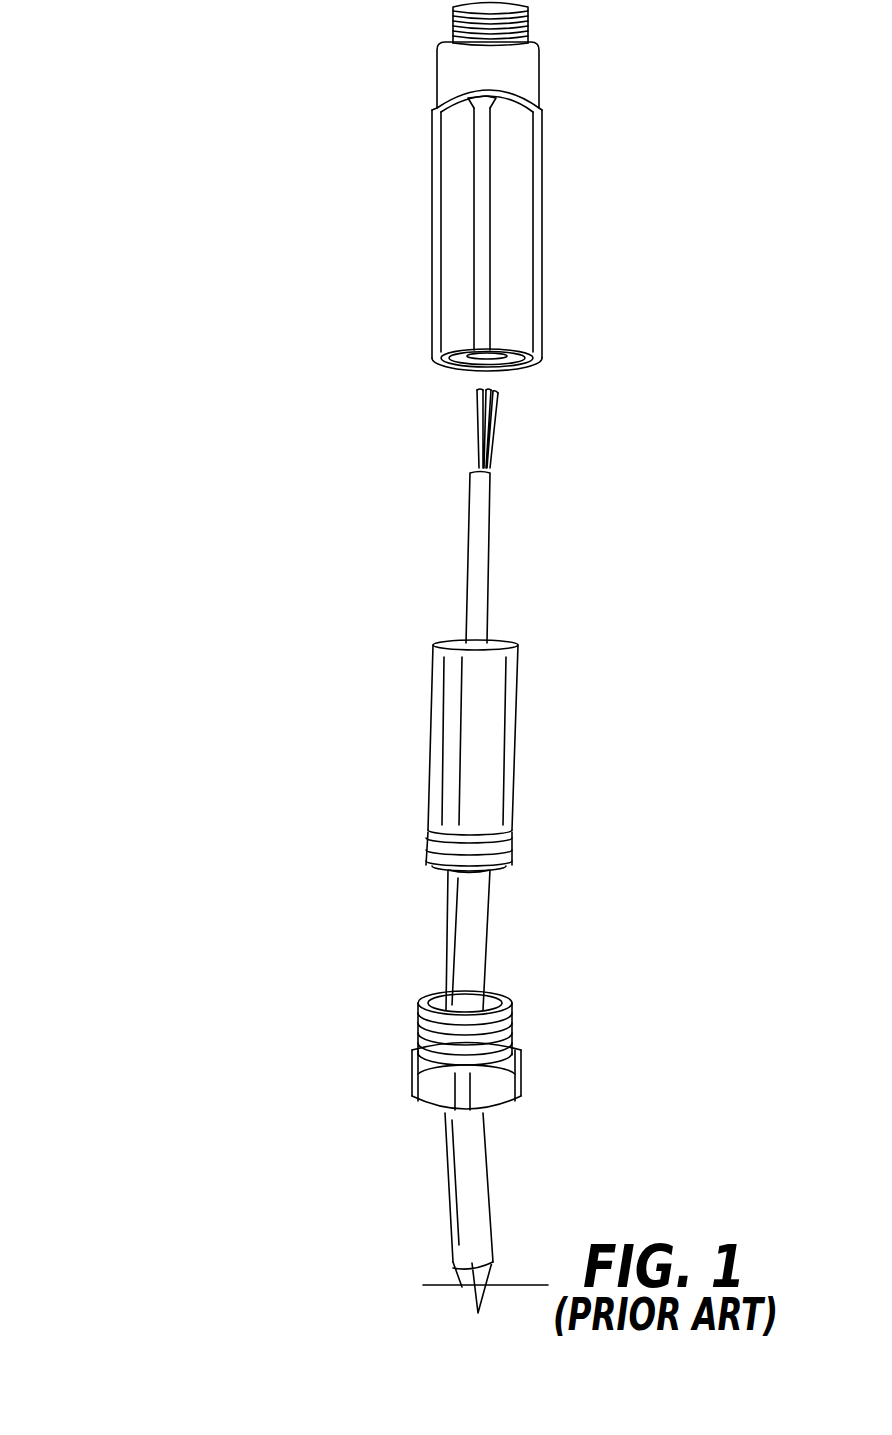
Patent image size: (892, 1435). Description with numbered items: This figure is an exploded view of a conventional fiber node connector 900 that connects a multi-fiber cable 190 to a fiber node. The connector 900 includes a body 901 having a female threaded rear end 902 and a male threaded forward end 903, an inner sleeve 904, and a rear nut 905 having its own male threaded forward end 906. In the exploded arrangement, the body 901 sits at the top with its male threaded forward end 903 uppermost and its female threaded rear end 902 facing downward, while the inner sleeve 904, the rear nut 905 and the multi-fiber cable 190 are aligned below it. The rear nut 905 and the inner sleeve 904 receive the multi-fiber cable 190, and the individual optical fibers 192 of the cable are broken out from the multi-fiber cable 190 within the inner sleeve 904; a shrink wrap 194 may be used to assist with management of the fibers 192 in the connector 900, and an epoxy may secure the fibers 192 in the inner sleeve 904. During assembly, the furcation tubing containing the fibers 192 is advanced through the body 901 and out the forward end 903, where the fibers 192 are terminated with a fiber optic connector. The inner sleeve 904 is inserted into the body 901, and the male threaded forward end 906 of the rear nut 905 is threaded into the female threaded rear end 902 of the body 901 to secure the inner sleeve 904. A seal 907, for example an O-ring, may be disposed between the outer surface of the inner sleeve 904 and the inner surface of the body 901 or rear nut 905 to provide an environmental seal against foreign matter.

The fiber node connector 900 is at (174, 240).
The body 901 is at (521, 216).
The female threaded rear end 902 is at (428, 388).
The male threaded forward end 903 is at (529, 31).
The inner sleeve 904 is at (493, 733).
The rear nut 905 is at (522, 1063).
The male threaded forward end 906 is at (513, 1023).
The seal 907 is at (512, 848).
The multi-fiber cable 190 is at (484, 912).
The optical fibers 192 is at (497, 418).
The shrink wrap 194 is at (483, 558).